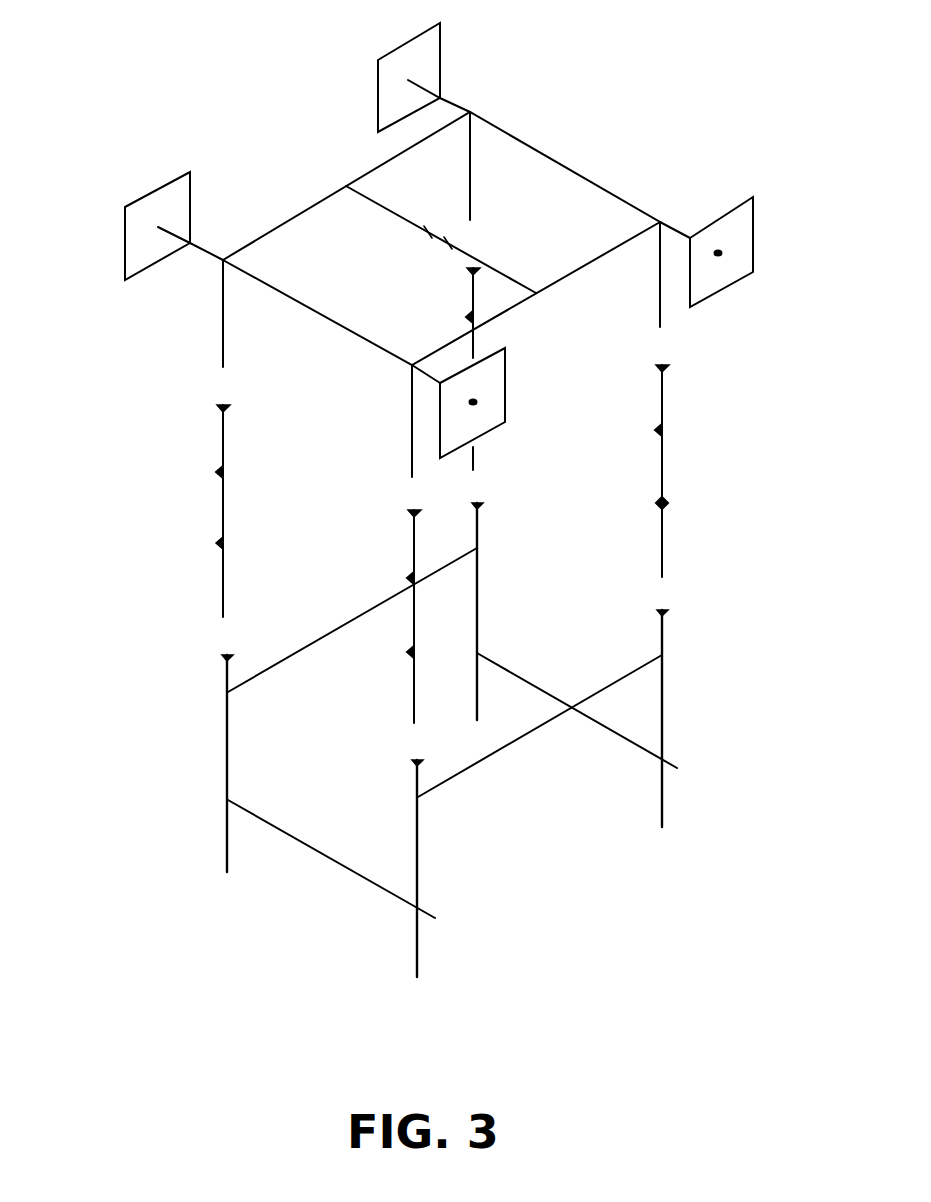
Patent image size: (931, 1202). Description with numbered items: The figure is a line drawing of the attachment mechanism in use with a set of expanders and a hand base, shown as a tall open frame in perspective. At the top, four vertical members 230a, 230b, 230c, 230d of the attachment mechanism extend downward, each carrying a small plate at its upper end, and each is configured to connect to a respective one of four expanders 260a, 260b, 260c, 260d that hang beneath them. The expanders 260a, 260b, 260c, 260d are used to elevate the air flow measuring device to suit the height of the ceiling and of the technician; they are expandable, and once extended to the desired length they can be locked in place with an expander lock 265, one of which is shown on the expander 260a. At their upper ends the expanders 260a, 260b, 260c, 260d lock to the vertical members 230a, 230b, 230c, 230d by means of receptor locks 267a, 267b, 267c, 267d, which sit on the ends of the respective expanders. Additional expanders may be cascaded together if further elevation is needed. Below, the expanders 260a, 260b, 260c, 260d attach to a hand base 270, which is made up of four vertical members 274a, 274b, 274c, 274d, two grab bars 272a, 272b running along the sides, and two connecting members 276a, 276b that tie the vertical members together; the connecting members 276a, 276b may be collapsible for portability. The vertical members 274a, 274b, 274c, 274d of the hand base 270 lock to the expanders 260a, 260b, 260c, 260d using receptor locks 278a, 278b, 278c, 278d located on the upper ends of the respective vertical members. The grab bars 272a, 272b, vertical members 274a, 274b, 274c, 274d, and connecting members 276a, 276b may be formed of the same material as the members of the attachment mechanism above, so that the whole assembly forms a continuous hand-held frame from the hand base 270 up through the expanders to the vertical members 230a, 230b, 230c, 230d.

The vertical member 230a is at (223, 348).
The vertical member 230b is at (472, 173).
The vertical member 230c is at (412, 420).
The vertical member 230d is at (660, 257).
The expander 260a is at (220, 511).
The expander 260b is at (467, 360).
The expander 260c is at (450, 609).
The expander 260d is at (659, 471).
The receptor lock 267a is at (232, 408).
The receptor lock 267b is at (478, 268).
The receptor lock 267c is at (420, 517).
The receptor lock 267d is at (668, 367).
The expander lock 265 is at (233, 543).
The hand base 270 is at (435, 717).
The vertical member 274a is at (227, 739).
The vertical member 274b is at (532, 588).
The vertical member 274c is at (414, 868).
The vertical member 274d is at (720, 718).
The receptor lock 278a is at (227, 655).
The receptor lock 278b is at (476, 503).
The receptor lock 278c is at (422, 763).
The receptor lock 278d is at (667, 612).
The connecting member 276a is at (300, 648).
The connecting member 276b is at (515, 738).
The grab bar 272a is at (252, 810).
The grab bar 272b is at (527, 680).